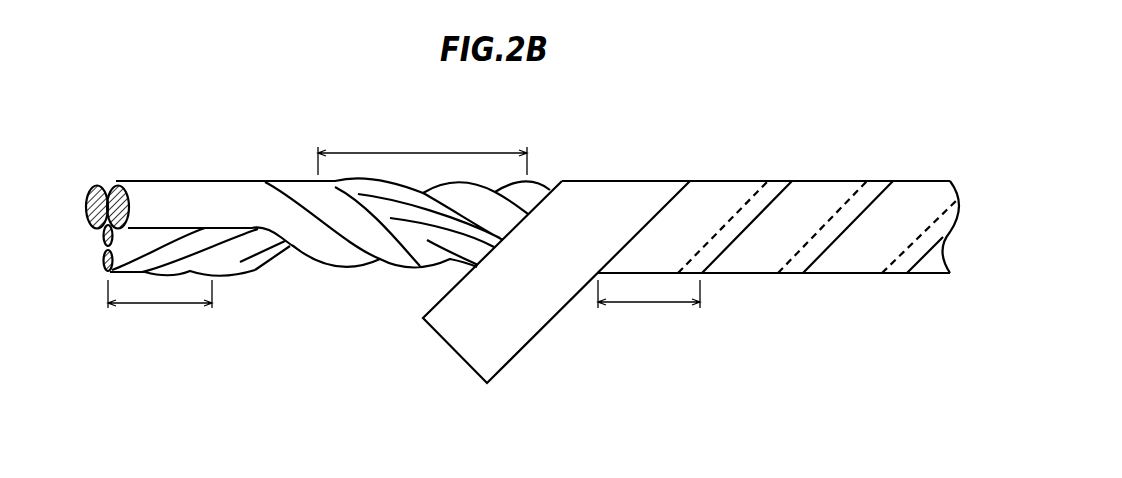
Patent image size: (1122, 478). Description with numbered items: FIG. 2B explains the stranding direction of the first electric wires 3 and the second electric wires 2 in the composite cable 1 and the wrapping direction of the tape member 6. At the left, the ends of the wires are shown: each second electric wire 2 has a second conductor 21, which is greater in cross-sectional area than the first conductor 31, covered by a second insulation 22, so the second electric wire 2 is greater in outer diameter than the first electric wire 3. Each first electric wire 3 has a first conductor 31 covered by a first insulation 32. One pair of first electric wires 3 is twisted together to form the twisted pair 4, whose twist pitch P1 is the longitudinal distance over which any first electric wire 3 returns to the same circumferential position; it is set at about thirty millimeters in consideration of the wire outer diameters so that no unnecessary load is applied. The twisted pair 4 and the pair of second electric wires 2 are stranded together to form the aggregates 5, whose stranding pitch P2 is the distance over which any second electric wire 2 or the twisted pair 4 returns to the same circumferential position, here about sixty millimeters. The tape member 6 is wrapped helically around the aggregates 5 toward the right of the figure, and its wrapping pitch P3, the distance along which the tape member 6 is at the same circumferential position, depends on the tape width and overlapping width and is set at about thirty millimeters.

The composite cable 1 is at (886, 135).
The second electric wire 2 is at (135, 182).
The second conductor 21 is at (93, 186).
The second insulation 22 is at (110, 187).
The first electric wire 3 is at (220, 263).
The first conductor 31 is at (104, 267).
The first insulation 32 is at (124, 257).
The twisted pair 4 is at (292, 265).
The aggregates 5 is at (267, 160).
The tape member 6 is at (853, 268).
The twist pitch P1 is at (160, 306).
The stranding pitch P2 is at (422, 152).
The wrapping pitch P3 is at (649, 306).